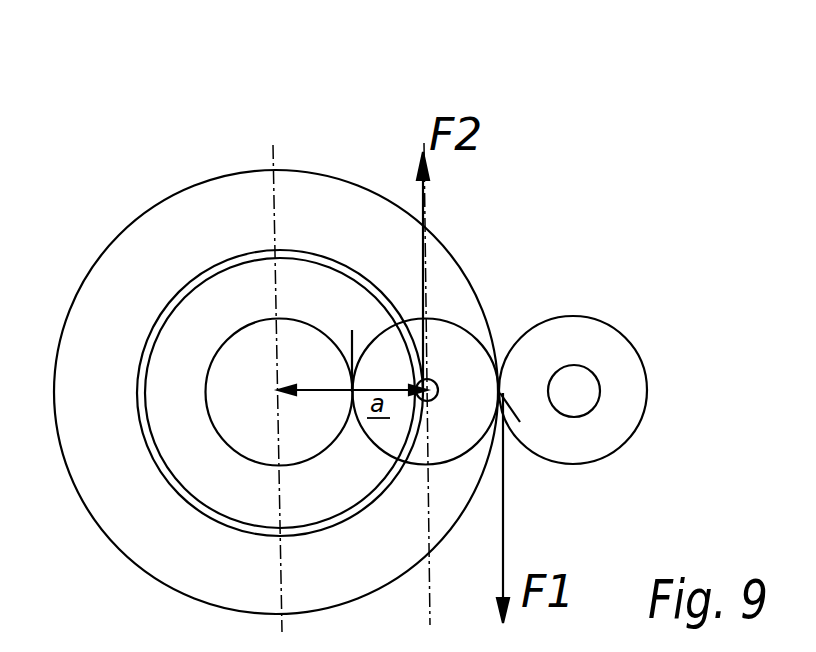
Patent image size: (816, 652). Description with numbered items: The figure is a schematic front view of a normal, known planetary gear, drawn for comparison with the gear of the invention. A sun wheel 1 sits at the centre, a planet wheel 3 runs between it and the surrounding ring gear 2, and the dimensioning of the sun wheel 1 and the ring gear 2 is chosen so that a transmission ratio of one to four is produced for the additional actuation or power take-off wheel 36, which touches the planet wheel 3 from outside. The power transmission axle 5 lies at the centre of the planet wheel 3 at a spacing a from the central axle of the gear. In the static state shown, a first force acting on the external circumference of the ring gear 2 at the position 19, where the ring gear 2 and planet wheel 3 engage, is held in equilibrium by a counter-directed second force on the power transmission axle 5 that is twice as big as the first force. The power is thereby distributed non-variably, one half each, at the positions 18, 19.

The sun wheel 1 is at (247, 430).
The ring gear 2 is at (72, 292).
The planet wheel 3 is at (459, 378).
The power transmission axle 5 is at (430, 372).
The position 18 is at (352, 330).
The position 19 is at (520, 422).
The actuation or power take-off wheel 36 is at (543, 351).